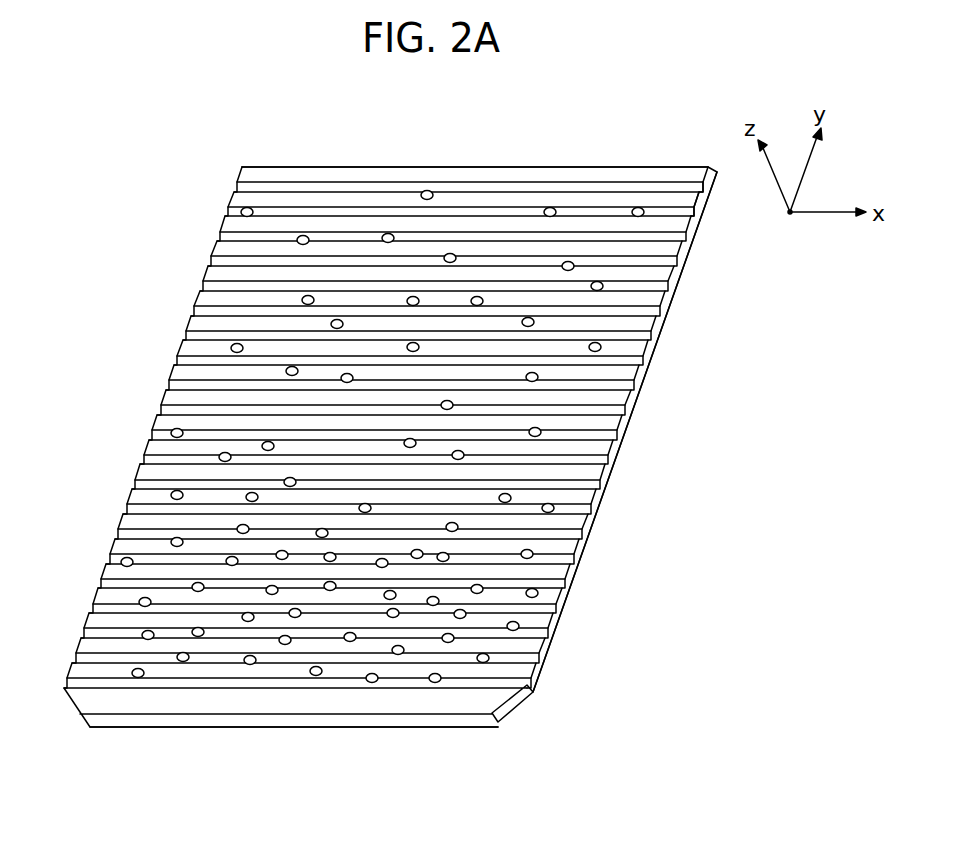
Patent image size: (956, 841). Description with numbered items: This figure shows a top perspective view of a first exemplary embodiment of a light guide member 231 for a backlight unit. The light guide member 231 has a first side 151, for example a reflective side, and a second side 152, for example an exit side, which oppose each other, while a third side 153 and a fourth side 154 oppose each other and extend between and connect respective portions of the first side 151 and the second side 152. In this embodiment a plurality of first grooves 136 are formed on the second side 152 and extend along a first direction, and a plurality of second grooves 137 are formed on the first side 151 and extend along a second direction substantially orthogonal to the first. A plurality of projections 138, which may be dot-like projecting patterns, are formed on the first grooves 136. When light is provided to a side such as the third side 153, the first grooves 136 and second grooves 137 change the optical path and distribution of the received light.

The first grooves 136 is at (170, 428).
The second grooves 137 is at (580, 590).
The projections 138 is at (601, 282).
The first side 151 is at (549, 657).
The second side 152 is at (672, 196).
The third side 153 is at (463, 728).
The fourth side 154 is at (551, 166).
The light guide member 231 is at (615, 478).